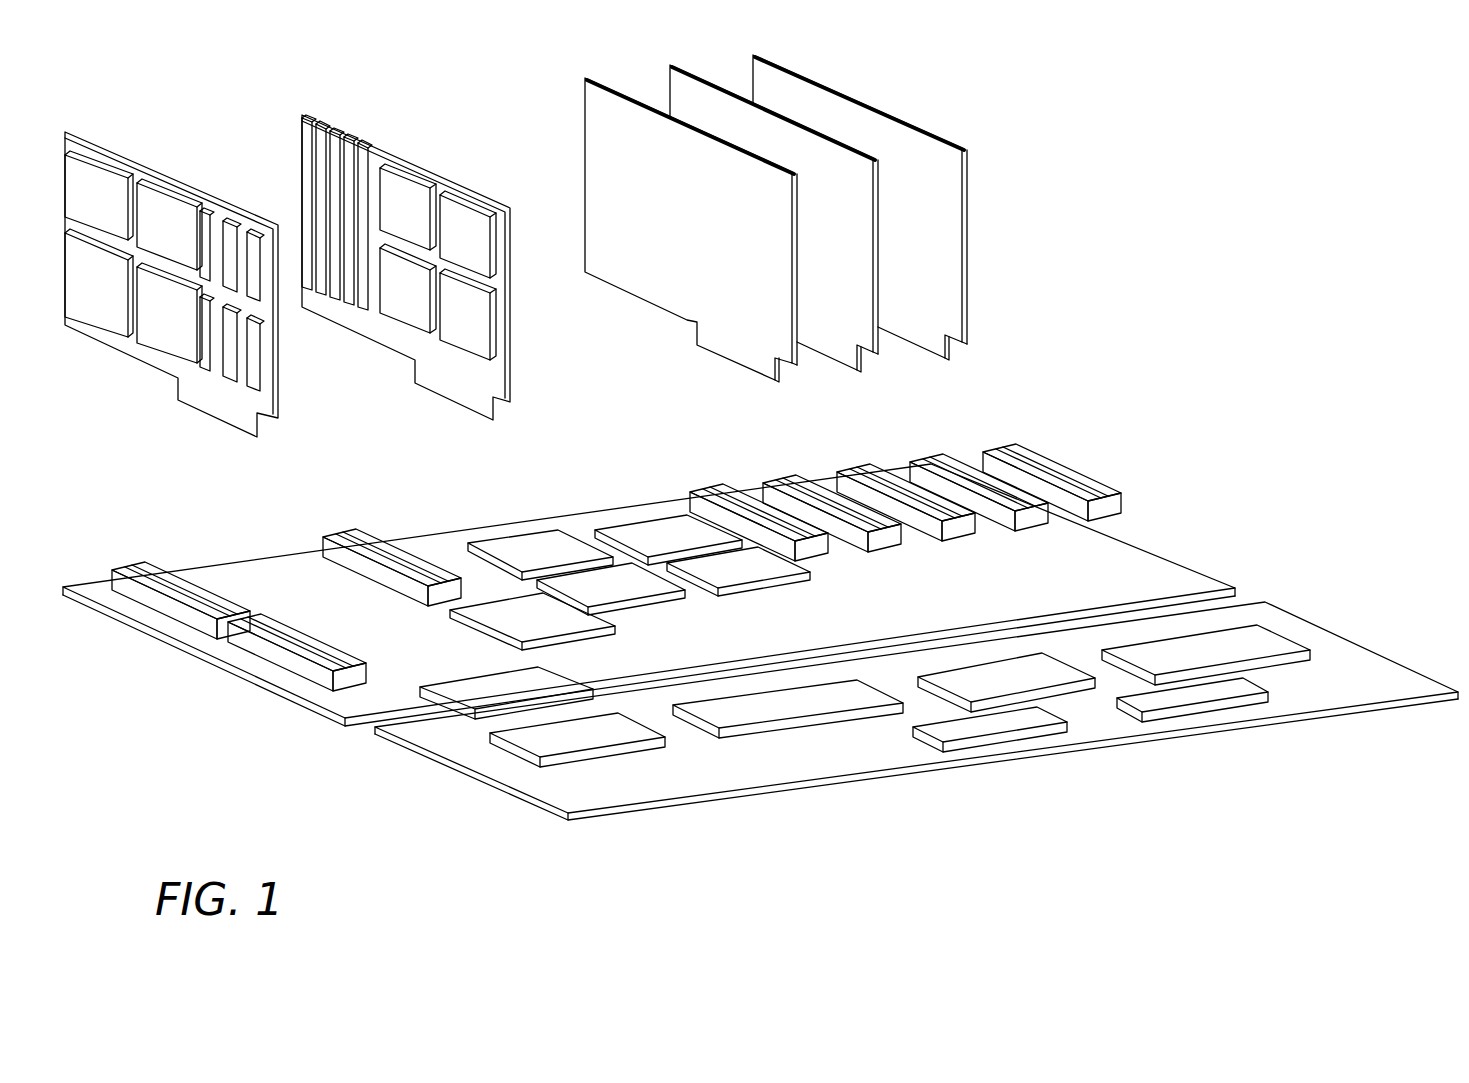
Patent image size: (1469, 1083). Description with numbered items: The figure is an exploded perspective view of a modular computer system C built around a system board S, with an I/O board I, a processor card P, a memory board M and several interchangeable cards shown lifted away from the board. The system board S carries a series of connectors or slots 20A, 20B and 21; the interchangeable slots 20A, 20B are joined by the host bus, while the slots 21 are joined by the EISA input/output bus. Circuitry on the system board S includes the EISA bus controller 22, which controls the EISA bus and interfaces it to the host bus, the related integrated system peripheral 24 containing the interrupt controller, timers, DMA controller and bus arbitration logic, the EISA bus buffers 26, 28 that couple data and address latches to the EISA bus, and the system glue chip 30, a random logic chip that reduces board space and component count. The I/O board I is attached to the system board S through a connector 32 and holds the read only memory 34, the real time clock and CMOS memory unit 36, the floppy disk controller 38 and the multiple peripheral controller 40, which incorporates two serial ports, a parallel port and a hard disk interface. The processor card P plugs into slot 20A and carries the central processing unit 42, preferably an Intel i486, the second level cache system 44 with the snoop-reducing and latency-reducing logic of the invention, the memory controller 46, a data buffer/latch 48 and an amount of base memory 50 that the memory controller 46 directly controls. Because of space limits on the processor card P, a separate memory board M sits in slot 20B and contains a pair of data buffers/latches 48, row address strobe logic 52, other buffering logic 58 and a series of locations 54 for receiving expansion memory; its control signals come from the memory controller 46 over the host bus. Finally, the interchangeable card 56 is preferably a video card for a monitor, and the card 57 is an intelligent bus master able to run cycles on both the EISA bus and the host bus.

The modular computer system C is at (754, 426).
The system board S is at (649, 585).
The I/O board I is at (916, 711).
The processor card P is at (164, 271).
The memory board M is at (433, 244).
The interchangeable slot 20A is at (362, 660).
The interchangeable slot 20B is at (412, 558).
The slots 21 is at (813, 548).
The EISA bus controller 22 is at (522, 538).
The integrated system peripheral 24 is at (633, 590).
The EISA bus buffer 26 is at (645, 518).
The EISA bus buffer 28 is at (775, 575).
The system glue chip 30 is at (577, 630).
The connector 32 is at (468, 677).
The read only memory 34 is at (607, 742).
The real time clock and CMOS memory unit 36 is at (873, 703).
The floppy disk controller 38 is at (1067, 678).
The multiple peripheral controller 40 is at (1270, 650).
The central processing unit 42 is at (90, 158).
The second level cache system 44 is at (93, 333).
The memory controller 46 is at (168, 188).
The data buffer/latch 48 is at (158, 353).
The base memory 50 is at (228, 217).
The row address strobe logic 52 is at (400, 320).
The locations for receiving memory 54 is at (364, 152).
The interchangeable card 56 is at (583, 90).
The bus master card 57 is at (677, 78).
The buffering logic 58 is at (488, 353).